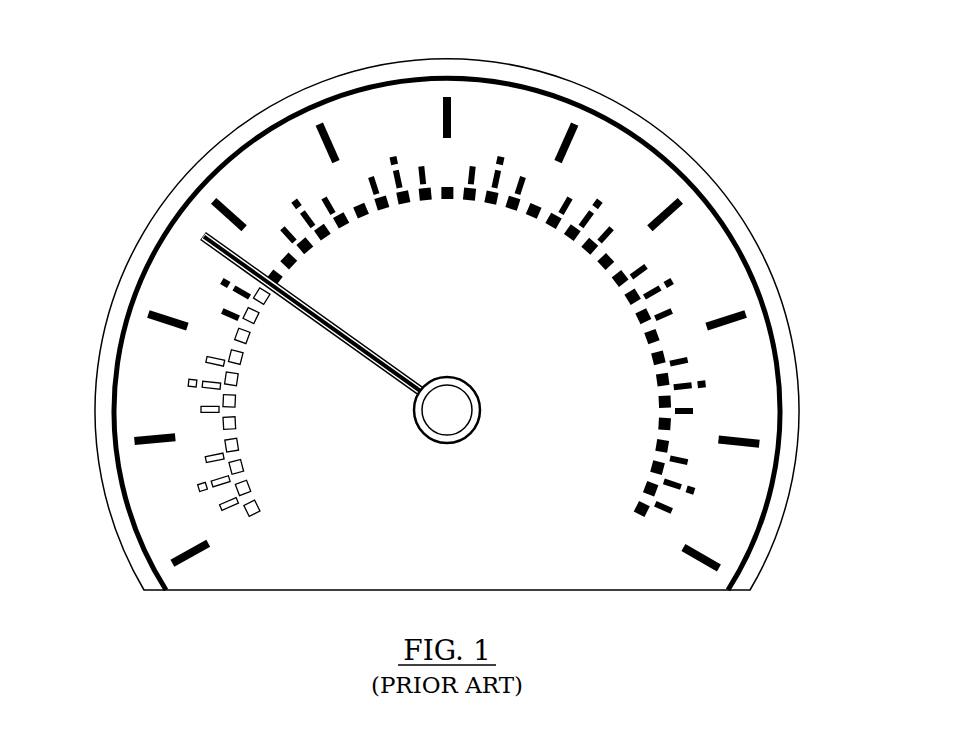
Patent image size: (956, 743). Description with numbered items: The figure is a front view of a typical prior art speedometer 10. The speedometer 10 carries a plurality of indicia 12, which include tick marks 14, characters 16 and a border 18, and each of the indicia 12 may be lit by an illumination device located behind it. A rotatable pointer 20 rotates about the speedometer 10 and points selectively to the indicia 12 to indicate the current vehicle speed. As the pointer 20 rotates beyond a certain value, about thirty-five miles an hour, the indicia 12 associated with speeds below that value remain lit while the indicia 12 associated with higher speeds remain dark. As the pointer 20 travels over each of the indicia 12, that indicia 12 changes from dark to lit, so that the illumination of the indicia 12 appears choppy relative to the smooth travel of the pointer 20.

The speedometer 10 is at (567, 74).
The indicia 12 is at (624, 173).
The tick marks 14 is at (340, 247).
The characters 16 is at (355, 156).
The border 18 is at (752, 261).
The rotatable pointer 20 is at (382, 348).